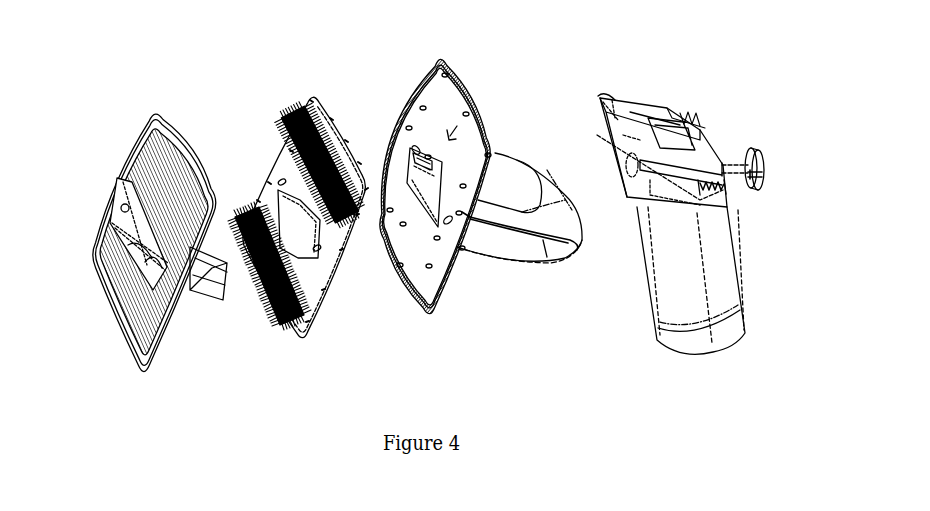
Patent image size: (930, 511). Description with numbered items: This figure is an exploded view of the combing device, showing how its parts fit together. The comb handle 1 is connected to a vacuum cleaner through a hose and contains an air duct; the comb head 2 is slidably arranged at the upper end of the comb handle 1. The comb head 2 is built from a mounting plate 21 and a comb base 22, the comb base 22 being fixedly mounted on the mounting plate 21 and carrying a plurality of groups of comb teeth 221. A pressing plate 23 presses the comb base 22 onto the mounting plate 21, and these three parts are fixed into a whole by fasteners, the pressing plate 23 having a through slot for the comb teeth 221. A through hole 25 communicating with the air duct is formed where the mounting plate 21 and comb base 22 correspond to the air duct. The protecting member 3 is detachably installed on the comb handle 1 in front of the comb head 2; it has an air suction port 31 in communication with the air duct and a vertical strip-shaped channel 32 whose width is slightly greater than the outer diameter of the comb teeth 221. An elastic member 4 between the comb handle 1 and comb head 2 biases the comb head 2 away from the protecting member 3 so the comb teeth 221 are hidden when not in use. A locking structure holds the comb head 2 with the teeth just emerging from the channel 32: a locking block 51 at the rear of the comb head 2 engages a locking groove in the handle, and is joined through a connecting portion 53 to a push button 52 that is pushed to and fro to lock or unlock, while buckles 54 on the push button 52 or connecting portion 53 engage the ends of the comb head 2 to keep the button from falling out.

The comb handle 1 is at (687, 260).
The comb head 2 is at (507, 187).
The mounting plate 21 is at (440, 102).
The comb base 22 is at (335, 257).
The comb tooth 221 is at (287, 115).
The pressing plate 23 is at (275, 175).
The through hole 25 is at (410, 150).
The protecting member 3 is at (113, 197).
The air suction port 31 is at (110, 223).
The channel 32 is at (140, 177).
The elastic member 4 is at (720, 203).
The locking block 51 is at (723, 175).
The push button 52 is at (760, 162).
The connecting portion 53 is at (725, 162).
The buckle 54 is at (750, 175).